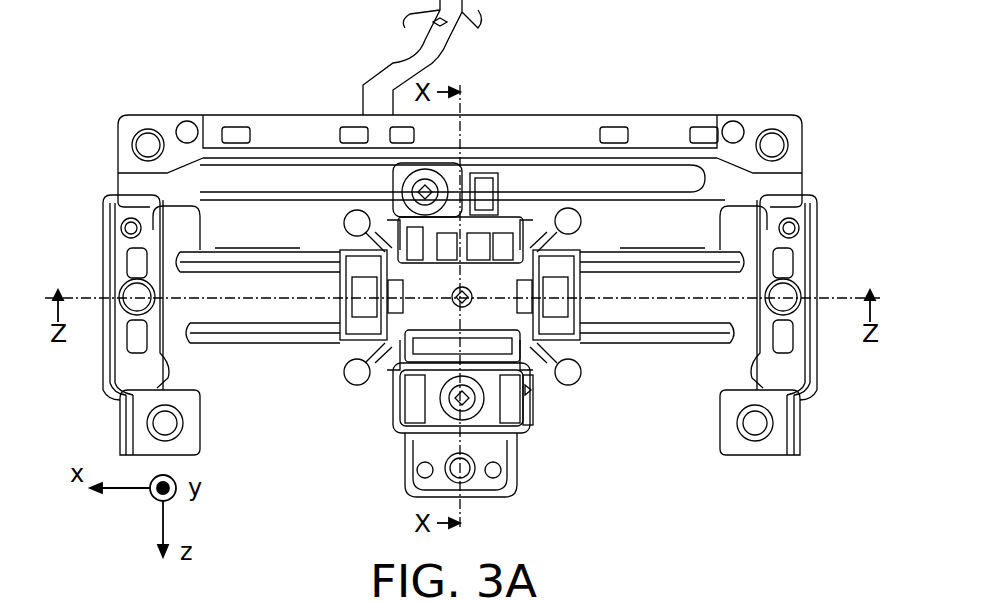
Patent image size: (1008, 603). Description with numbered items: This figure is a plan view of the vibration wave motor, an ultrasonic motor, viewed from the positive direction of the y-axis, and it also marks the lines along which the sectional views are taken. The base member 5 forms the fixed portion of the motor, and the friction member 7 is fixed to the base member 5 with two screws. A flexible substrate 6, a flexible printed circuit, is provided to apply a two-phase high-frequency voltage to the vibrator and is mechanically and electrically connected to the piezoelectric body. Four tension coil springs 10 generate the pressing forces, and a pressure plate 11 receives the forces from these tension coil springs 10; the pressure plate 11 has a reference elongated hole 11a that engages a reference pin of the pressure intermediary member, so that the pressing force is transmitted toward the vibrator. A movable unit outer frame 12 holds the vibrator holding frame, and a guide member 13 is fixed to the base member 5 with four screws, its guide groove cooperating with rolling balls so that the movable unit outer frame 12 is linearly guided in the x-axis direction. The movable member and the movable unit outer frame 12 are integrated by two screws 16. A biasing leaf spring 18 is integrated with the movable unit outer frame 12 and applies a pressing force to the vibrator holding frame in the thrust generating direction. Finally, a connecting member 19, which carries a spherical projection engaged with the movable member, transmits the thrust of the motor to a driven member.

The base member 5 is at (628, 108).
The flexible substrate 6 is at (375, 68).
The friction member 7 is at (210, 312).
The tension coil springs 10 is at (348, 368).
The pressure plate 11 is at (479, 275).
The reference elongated hole 11a is at (466, 290).
The movable unit outer frame 12 is at (530, 423).
The guide member 13 is at (640, 343).
The screws 16 is at (440, 183).
The biasing leaf spring 18 is at (340, 272).
The connecting member 19 is at (522, 482).